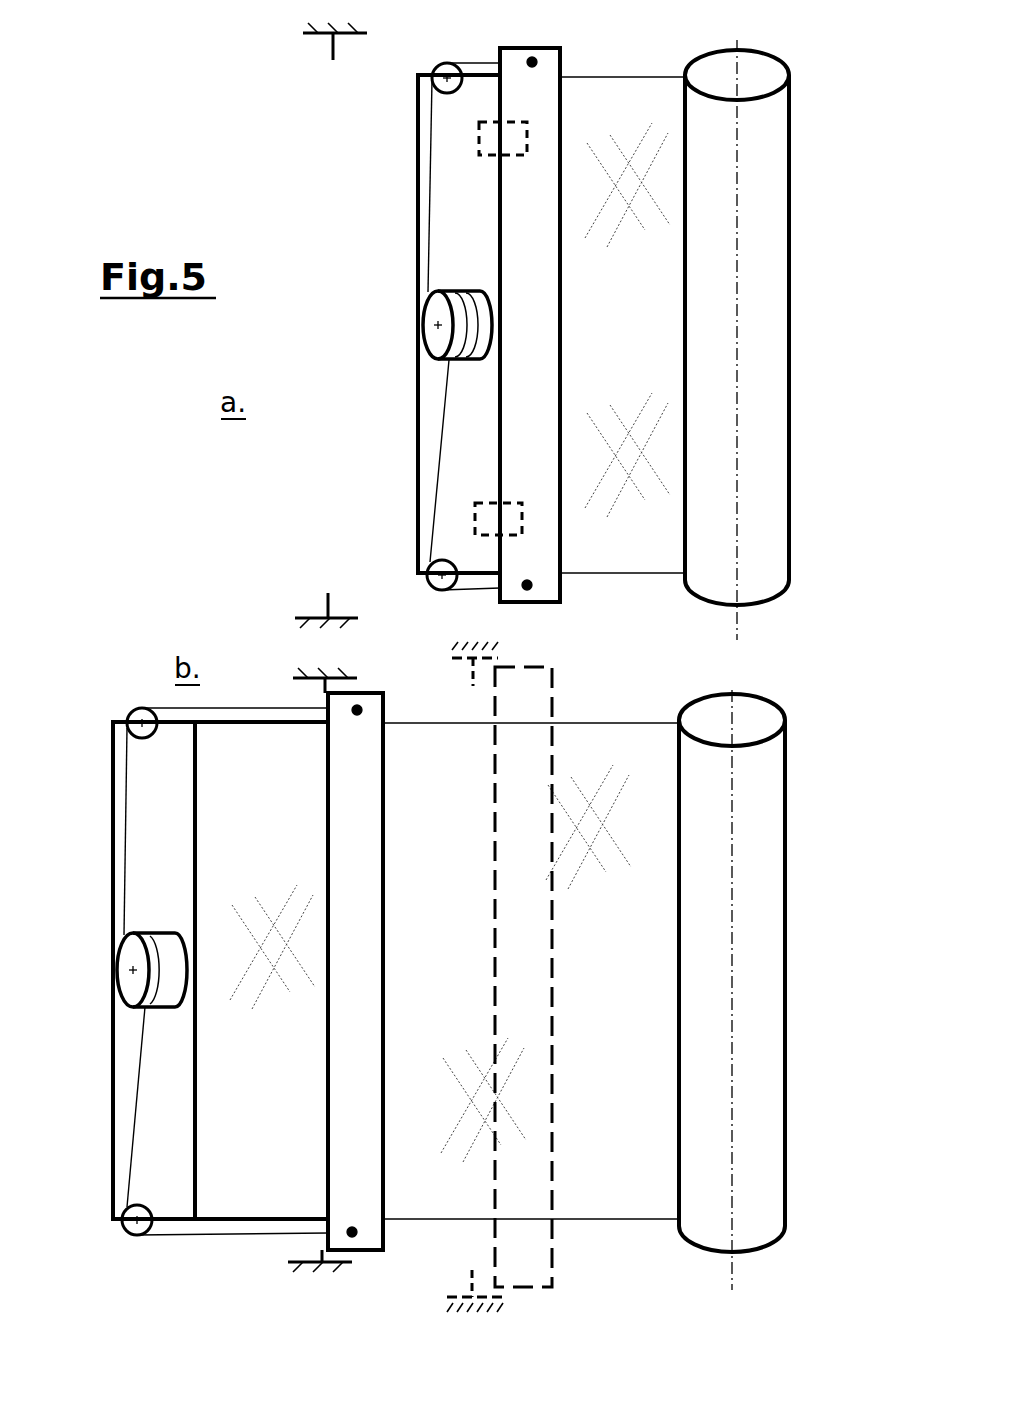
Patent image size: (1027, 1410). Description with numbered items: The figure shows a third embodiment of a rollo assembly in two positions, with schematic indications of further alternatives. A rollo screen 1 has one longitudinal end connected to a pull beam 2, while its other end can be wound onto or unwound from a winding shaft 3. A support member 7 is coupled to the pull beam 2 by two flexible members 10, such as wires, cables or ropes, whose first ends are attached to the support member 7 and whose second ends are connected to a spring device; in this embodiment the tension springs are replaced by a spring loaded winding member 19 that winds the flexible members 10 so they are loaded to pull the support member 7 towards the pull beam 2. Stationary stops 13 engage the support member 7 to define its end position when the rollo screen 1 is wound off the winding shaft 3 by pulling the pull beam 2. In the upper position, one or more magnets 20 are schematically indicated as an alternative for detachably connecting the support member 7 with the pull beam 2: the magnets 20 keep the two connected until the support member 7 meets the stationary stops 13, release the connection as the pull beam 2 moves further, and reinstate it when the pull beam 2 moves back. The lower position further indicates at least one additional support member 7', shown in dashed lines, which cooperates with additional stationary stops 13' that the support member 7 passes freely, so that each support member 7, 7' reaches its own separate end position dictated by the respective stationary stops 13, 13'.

The rollo screen 1 is at (612, 84).
The pull beam 2 is at (442, 234).
The winding shaft 3 is at (702, 62).
The support member 7 is at (455, 634).
The additional support member 7' is at (549, 975).
The flexible members 10 is at (468, 64).
The stationary stops 13 is at (298, 657).
The additional stationary stops 13' is at (494, 971).
The spring loaded winding member 19 is at (436, 334).
The magnets 20 is at (480, 140).